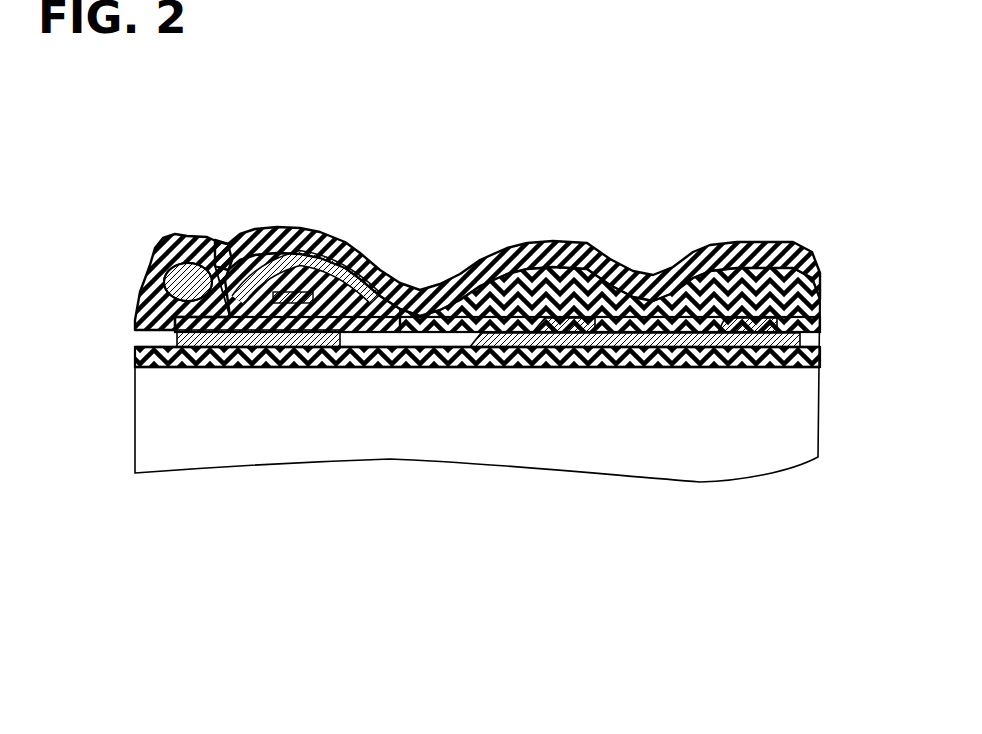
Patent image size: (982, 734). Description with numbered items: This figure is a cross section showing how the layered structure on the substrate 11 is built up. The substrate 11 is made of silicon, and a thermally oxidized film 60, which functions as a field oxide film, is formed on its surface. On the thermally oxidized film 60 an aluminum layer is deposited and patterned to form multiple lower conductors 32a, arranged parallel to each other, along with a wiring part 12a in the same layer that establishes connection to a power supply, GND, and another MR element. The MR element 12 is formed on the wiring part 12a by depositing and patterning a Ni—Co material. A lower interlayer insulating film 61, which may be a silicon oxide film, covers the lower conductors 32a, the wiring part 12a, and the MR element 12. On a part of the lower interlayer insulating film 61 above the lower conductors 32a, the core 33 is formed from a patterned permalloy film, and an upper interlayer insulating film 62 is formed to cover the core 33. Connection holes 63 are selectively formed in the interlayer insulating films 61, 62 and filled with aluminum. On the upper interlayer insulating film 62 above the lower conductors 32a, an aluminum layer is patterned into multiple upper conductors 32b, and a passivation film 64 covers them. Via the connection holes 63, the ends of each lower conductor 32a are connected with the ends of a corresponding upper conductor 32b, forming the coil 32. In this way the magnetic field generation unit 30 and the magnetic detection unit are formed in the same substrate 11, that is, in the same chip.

The substrate 11 is at (803, 410).
The thermally oxidized film 60 is at (812, 360).
The lower interlayer insulating film 61 is at (810, 325).
The upper interlayer insulating film 62 is at (812, 303).
The passivation film 64 is at (808, 268).
The MR element 12 is at (630, 337).
The wiring part 12a is at (516, 340).
The magnetic field generation unit 30 is at (160, 243).
The connection holes 63 is at (192, 268).
The core 33 is at (287, 267).
The coil 32 is at (452, 192).
The lower conductors 32a is at (393, 293).
The upper conductors 32b is at (342, 240).